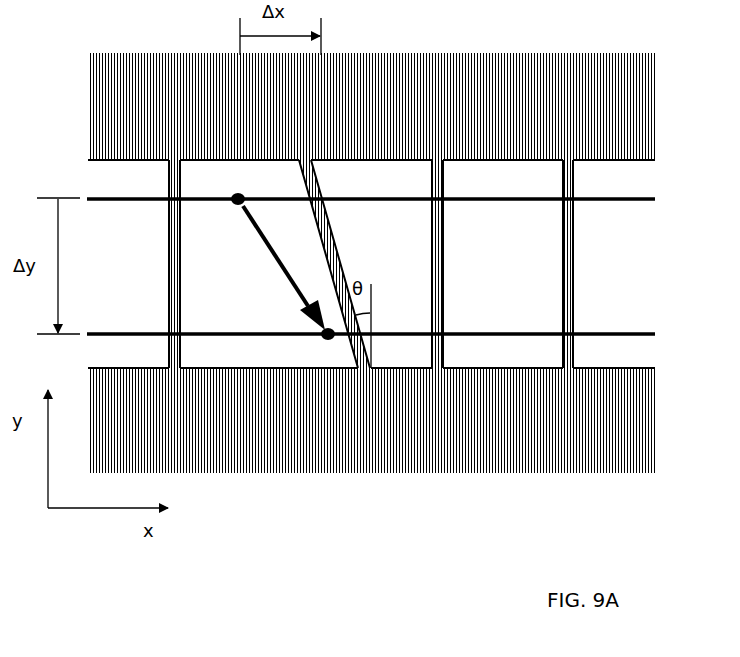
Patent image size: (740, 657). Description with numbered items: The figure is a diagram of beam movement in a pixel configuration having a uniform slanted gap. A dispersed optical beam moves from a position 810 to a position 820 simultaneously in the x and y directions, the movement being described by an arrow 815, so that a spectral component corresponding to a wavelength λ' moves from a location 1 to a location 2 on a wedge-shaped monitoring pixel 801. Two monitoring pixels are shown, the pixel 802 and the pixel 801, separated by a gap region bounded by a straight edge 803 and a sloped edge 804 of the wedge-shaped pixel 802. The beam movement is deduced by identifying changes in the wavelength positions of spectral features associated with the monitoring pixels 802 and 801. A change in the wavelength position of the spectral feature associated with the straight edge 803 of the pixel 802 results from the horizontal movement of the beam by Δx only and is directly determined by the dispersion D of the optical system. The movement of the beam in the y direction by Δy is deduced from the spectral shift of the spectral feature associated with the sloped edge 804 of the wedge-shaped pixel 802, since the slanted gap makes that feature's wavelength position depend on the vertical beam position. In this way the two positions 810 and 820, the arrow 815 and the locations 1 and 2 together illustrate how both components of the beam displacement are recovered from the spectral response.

The wedge-shaped monitoring pixel 801 is at (250, 370).
The monitoring pixel 802 is at (365, 160).
The straight edge 803 is at (432, 268).
The sloped edge 804 is at (331, 227).
The beam position 810 is at (655, 198).
The beam position 820 is at (655, 332).
The arrow 815 is at (277, 263).
The location 1 is at (239, 192).
The location 2 is at (329, 341).